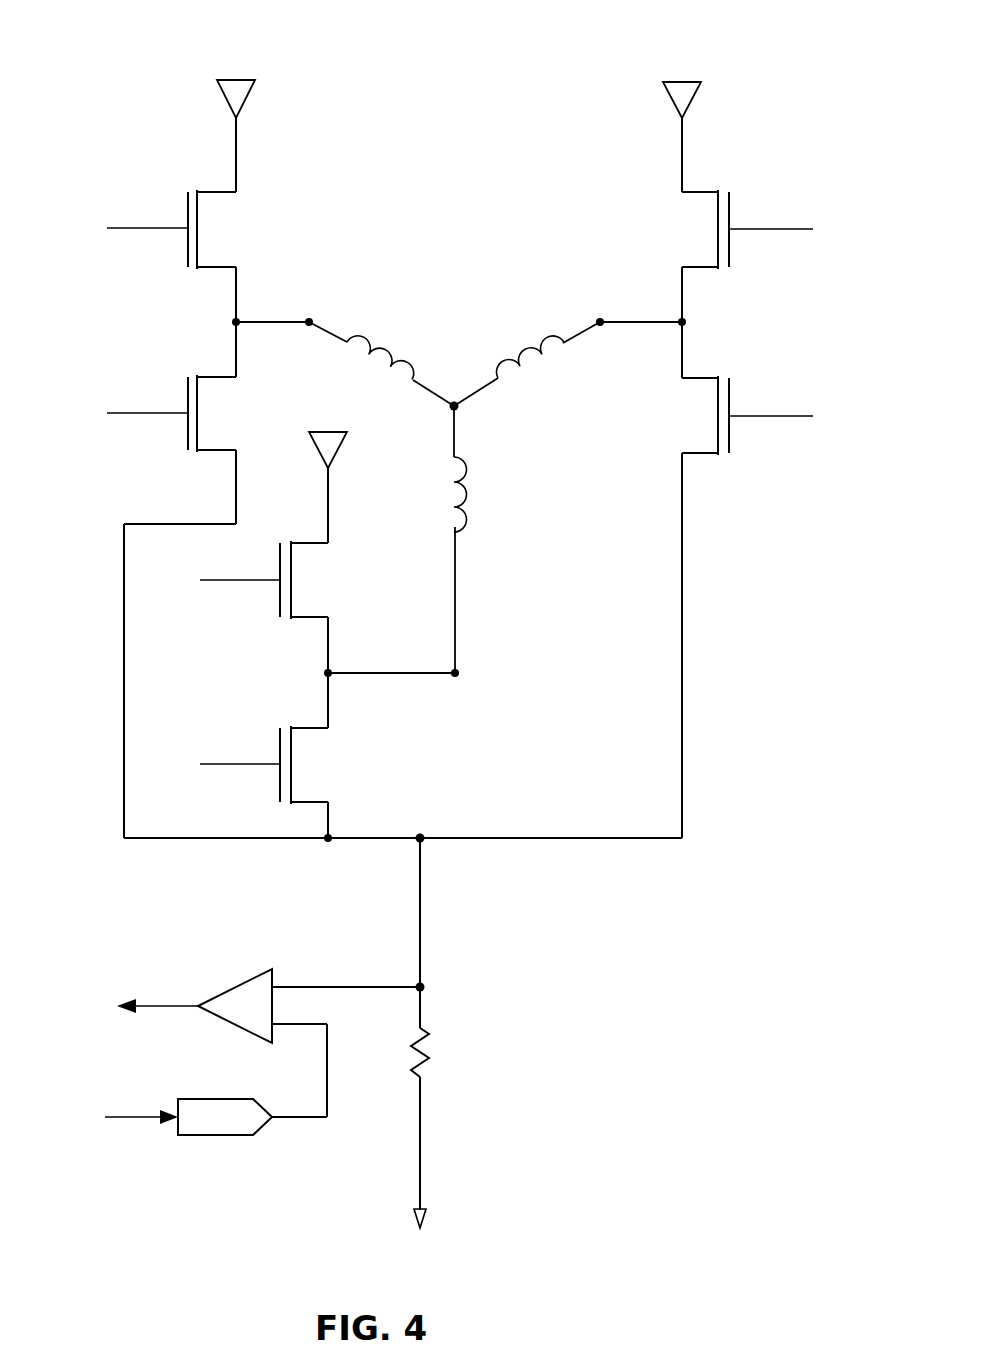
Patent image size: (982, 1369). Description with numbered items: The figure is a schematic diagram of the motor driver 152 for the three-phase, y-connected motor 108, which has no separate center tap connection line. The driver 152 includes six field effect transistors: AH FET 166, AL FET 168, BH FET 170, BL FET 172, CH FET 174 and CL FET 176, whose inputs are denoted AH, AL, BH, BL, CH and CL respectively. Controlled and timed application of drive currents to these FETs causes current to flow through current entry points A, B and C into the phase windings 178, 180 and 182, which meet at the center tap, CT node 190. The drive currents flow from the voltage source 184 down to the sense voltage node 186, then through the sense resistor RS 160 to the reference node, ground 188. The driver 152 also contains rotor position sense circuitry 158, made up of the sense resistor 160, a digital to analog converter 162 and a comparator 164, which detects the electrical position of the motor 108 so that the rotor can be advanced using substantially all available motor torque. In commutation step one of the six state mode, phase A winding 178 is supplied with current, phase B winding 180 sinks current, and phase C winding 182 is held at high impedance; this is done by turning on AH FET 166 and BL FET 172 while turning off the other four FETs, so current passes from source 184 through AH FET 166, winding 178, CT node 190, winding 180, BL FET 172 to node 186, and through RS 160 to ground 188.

The driver 152 is at (168, 68).
The voltage source 184 is at (236, 80).
The AH FET 166 is at (188, 205).
The AL FET 168 is at (188, 395).
The BH FET 170 is at (730, 215).
The BL FET 172 is at (730, 432).
The CH FET 174 is at (280, 603).
The CL FET 176 is at (280, 788).
The motor 108 is at (456, 310).
The A phase winding 178 is at (365, 358).
The B phase winding 180 is at (517, 370).
The C phase winding 182 is at (465, 523).
The CT node 190 is at (443, 413).
The sense voltage node 186 is at (413, 808).
The rotor position sense circuitry 158 is at (535, 1016).
The sense resistor 160 is at (427, 1063).
The reference node 188 is at (427, 1218).
The comparator 164 is at (237, 988).
The digital to analog converter 162 is at (228, 1136).